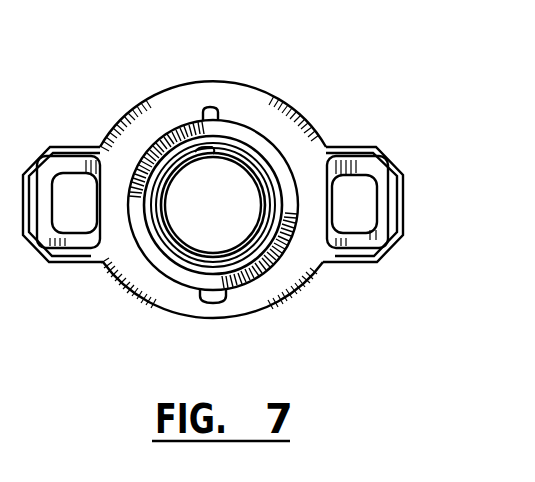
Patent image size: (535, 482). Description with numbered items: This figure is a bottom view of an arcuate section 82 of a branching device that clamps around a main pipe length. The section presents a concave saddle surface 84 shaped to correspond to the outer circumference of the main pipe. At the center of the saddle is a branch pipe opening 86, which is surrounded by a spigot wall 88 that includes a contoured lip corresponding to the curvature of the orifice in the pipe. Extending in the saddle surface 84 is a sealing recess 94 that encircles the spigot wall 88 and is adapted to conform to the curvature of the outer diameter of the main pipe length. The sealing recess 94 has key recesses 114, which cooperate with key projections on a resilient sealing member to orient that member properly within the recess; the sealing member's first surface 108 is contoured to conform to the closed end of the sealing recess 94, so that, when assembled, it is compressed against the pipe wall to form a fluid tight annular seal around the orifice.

The second arcuate section 82 is at (137, 83).
The concave saddle surface 84 is at (321, 169).
The branch pipe opening 86 is at (243, 237).
The spigot wall 88 is at (214, 152).
The sealing recess 94 is at (192, 282).
The first surface 108 is at (51, 252).
The key recesses 114 is at (222, 114).